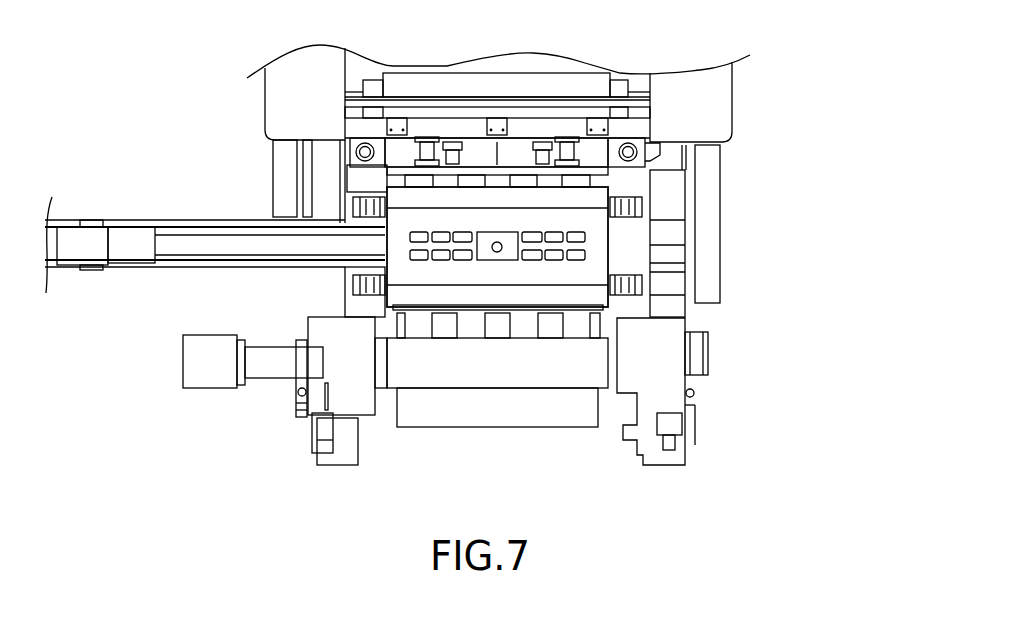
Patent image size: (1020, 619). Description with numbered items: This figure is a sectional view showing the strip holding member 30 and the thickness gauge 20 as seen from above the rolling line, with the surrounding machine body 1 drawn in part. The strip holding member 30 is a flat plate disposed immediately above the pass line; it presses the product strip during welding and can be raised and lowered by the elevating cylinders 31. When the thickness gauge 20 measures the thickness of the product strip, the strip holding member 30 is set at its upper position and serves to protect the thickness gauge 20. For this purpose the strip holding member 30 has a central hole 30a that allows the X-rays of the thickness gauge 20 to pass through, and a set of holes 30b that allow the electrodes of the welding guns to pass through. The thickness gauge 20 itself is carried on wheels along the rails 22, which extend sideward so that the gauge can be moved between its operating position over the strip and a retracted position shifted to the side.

The machine body / frame 1 is at (718, 100).
The thickness gauge 20 is at (92, 240).
The rails 22 is at (188, 257).
The strip holding member 30 is at (622, 342).
The hole 30a is at (507, 262).
The holes 30b is at (553, 262).
The elevating cylinders 31 is at (626, 295).